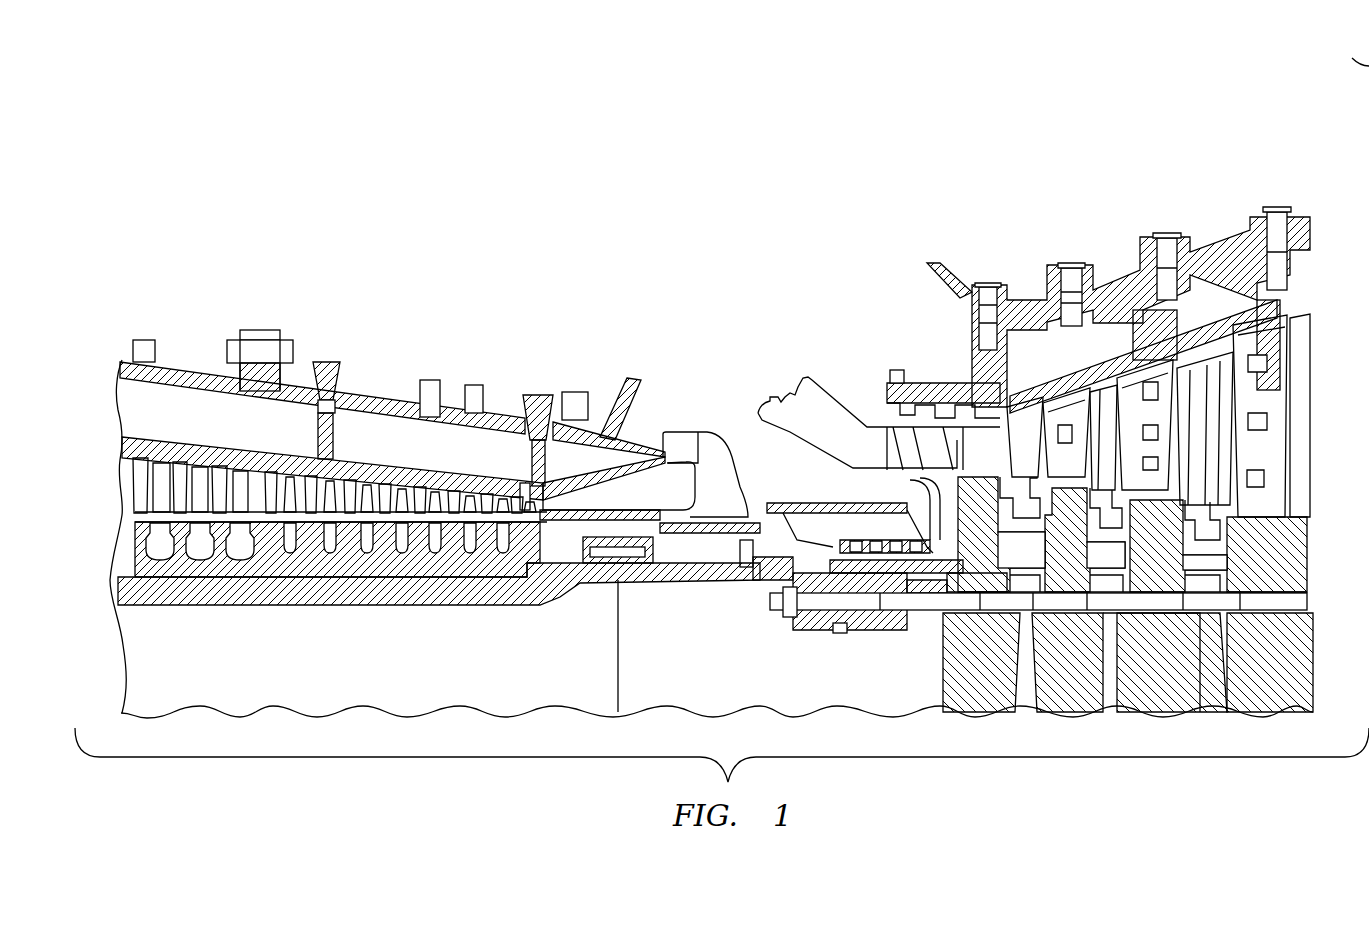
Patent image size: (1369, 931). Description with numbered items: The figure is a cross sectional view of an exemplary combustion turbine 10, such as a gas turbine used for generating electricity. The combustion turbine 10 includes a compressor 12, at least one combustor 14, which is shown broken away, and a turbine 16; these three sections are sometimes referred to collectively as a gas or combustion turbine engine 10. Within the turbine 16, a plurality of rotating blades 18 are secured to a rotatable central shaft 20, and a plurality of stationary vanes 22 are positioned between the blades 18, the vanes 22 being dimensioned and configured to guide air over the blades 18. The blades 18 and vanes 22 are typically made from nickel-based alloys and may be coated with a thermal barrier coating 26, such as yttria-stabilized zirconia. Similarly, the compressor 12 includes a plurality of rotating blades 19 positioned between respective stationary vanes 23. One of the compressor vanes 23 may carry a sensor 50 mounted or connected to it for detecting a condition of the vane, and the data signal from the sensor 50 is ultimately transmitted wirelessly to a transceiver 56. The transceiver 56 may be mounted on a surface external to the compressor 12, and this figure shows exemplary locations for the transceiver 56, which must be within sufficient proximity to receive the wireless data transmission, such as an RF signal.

The combustion turbine 10 is at (1048, 123).
The compressor 12 is at (324, 286).
The combustor 14 is at (826, 425).
The turbine 16 is at (1172, 172).
The rotating blades 18 is at (1077, 418).
The rotating blades 19 is at (337, 478).
The rotatable central shaft 20 is at (930, 615).
The stationary vanes 22 is at (1030, 420).
The vanes 23 is at (200, 488).
The thermal barrier coating 26 is at (1020, 438).
The sensor 50 is at (1063, 428).
The transceiver 56 is at (140, 340).